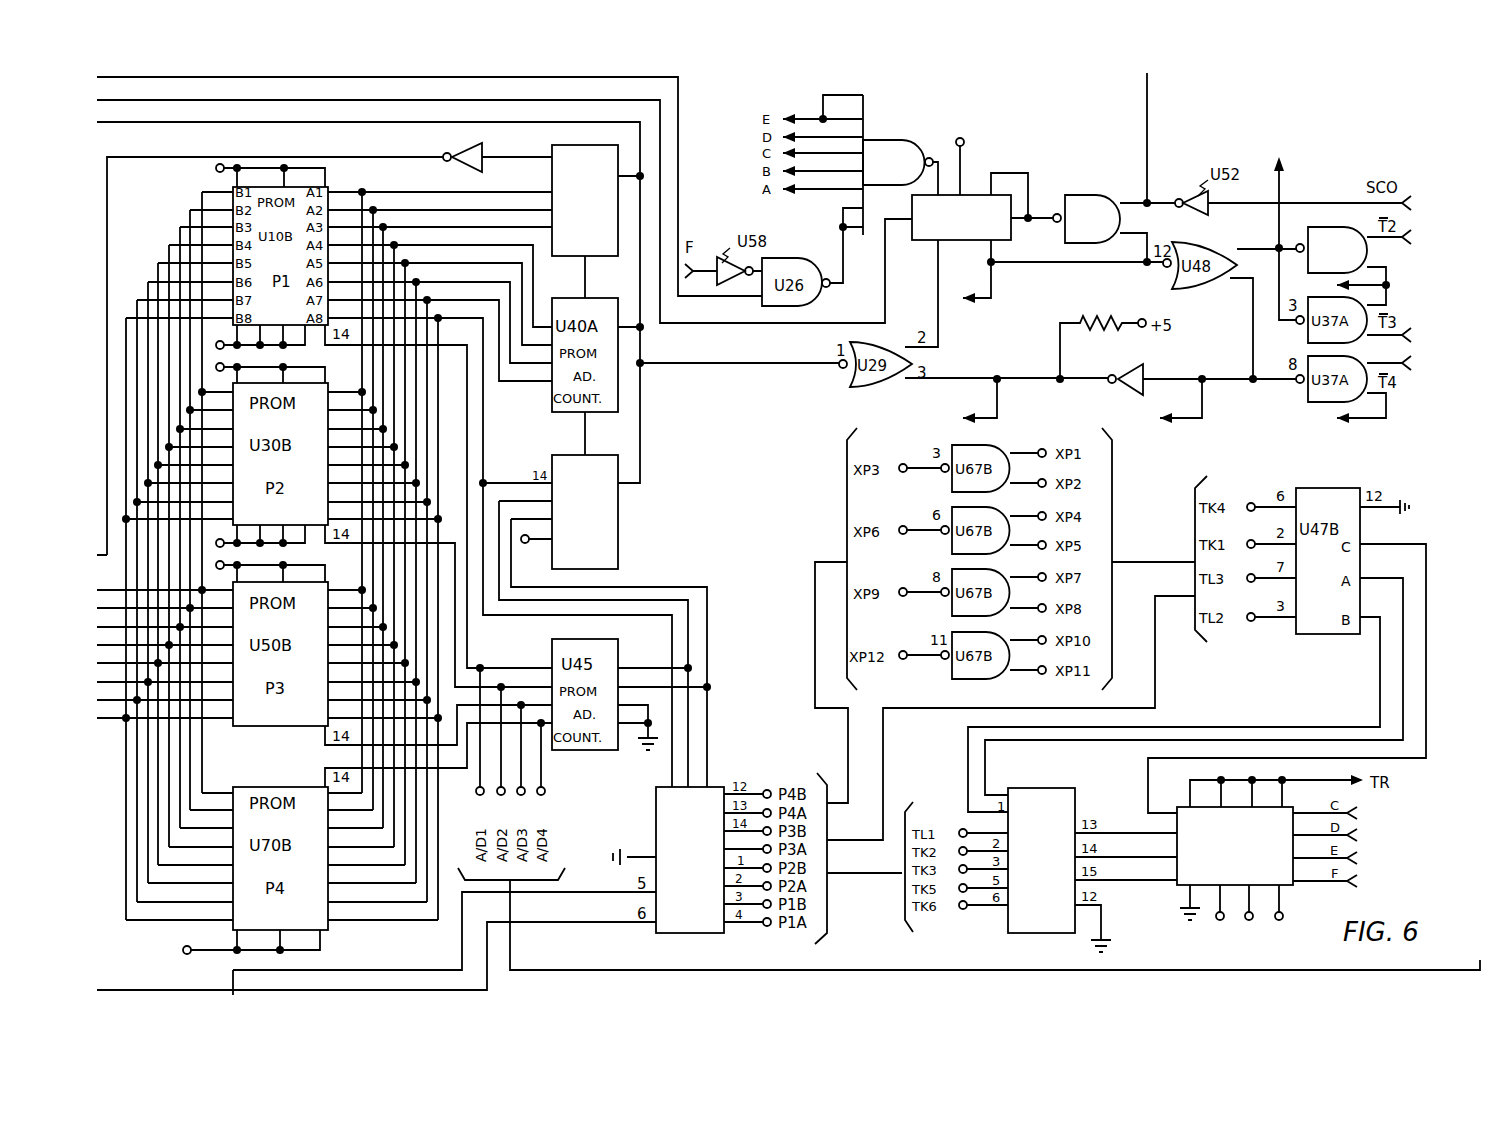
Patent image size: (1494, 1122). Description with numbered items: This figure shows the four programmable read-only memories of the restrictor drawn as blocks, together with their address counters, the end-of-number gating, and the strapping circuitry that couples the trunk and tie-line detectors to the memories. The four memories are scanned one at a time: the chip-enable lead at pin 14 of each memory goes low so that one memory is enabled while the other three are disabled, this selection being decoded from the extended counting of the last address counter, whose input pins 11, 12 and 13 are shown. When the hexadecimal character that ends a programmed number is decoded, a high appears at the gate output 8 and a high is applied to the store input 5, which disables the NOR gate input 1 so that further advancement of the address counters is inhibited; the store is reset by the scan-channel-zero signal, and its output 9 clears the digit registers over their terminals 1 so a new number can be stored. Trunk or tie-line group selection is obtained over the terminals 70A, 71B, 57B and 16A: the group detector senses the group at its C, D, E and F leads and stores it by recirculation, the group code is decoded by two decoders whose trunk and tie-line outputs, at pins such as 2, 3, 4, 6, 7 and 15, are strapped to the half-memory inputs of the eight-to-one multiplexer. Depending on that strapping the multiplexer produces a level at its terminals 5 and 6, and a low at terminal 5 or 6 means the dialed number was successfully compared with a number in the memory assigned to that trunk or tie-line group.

The chip enable lead 14 is at (567, 198).
The pin 13 terminal 13 is at (575, 512).
The PROM address counter U50A pin 12 is at (575, 512).
The pin 11 terminal 11 is at (577, 512).
The U43 output terminal 9 is at (950, 231).
The terminal 5 is at (961, 231).
The U8 output terminal 8 is at (906, 162).
The pin 3 terminal 3 is at (1091, 212).
The terminal 1 is at (1095, 212).
The pin 2 terminal 2 is at (1095, 219).
The terminal 6 is at (1327, 247).
The U37B input pin 7 is at (1033, 857).
The pin 4 terminal 4 is at (1034, 857).
The pin 15 terminal 15 is at (701, 860).
The trunk or tie line group selection terminal 70A is at (1287, 849).
The trunk or tie line group selection terminal 71B is at (1287, 849).
The trunk or tie line group selection terminal 57B is at (1287, 849).
The trunk or tie line group selection terminal 16A is at (1287, 849).